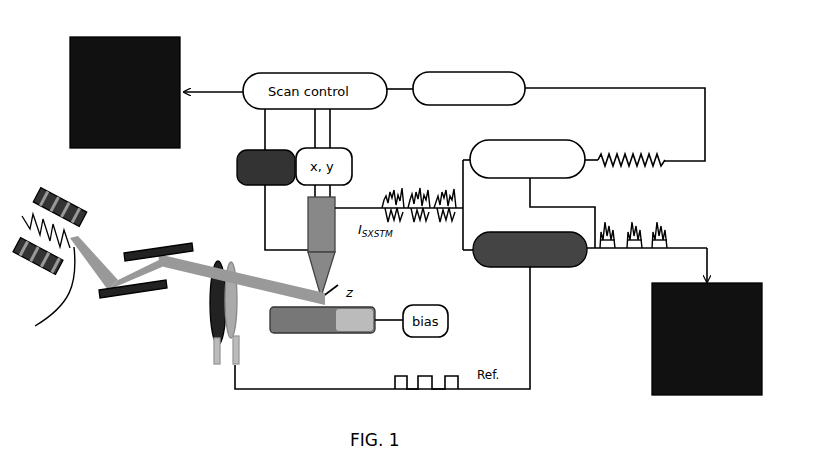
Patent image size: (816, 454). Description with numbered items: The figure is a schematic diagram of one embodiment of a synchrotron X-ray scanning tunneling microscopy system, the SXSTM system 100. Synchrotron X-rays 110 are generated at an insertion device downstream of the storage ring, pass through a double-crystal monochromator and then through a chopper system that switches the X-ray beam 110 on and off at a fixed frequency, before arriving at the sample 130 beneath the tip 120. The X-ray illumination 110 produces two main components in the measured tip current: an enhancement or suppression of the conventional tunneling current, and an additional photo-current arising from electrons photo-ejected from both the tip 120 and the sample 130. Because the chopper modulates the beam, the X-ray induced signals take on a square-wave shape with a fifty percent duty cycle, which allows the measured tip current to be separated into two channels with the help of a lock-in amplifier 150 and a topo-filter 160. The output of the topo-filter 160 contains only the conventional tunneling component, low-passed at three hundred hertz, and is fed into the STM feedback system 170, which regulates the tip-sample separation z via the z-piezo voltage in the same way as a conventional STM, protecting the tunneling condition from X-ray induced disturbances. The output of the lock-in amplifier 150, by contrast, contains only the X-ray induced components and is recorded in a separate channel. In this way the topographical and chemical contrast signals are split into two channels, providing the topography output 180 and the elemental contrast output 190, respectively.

The SXSTM system 100 is at (552, 71).
The X-ray illumination 110 is at (258, 280).
The tip 120 is at (331, 262).
The sample 130 is at (352, 323).
The lock-in amplifier 150 is at (560, 268).
The topo-filter 160 is at (576, 141).
The STM feedback system 170 is at (468, 72).
The topographical output 180 is at (181, 62).
The chemical contrast output 190 is at (742, 278).